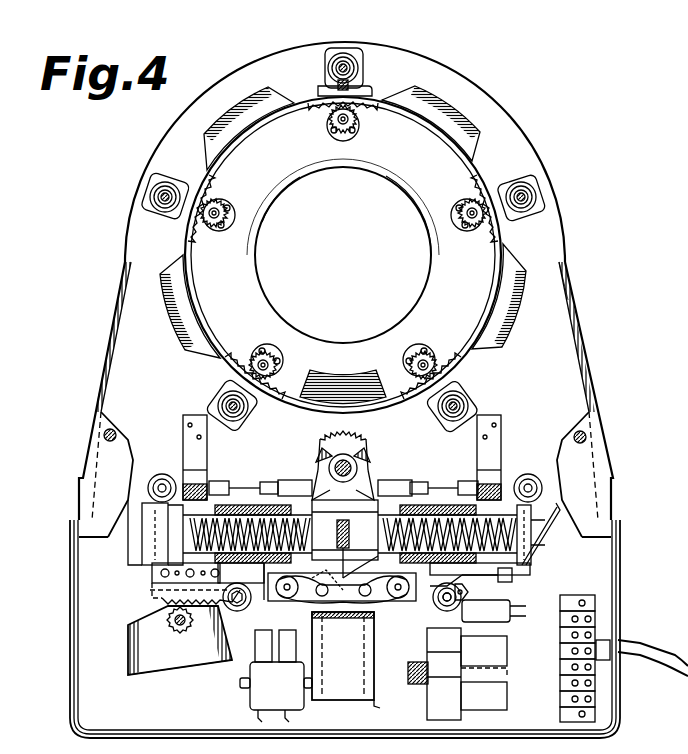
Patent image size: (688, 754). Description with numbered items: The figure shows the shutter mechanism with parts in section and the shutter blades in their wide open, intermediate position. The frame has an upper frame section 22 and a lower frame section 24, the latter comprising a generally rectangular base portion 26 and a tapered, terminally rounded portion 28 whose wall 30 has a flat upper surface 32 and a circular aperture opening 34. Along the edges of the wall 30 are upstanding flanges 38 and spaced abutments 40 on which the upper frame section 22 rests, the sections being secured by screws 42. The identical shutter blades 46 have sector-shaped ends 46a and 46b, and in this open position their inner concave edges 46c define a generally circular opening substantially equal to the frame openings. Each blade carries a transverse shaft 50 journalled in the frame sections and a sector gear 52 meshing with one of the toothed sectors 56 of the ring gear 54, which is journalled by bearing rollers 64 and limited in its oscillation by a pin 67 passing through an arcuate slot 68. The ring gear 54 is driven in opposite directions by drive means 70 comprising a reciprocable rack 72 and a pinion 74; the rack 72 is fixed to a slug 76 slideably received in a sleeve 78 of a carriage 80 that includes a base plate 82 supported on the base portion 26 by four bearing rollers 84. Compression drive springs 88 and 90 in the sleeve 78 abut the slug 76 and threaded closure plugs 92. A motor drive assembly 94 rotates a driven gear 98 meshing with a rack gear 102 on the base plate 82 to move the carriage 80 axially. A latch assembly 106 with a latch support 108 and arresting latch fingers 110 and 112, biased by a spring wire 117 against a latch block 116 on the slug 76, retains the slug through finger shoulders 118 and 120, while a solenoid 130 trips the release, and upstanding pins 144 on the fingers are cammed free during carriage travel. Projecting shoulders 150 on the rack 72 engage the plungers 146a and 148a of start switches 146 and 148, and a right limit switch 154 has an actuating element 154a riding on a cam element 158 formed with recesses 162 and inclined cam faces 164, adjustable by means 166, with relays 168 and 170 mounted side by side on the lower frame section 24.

The upper frame section 22 is at (598, 468).
The lower frame section 24 is at (605, 392).
The base portion 26 is at (622, 580).
The tapered portion 28 is at (515, 132).
The wall 30 is at (586, 318).
The flat upper surface 32 is at (572, 252).
The aperture opening 34 is at (400, 192).
The upstanding flanges 38 is at (103, 370).
The upstanding abutments 40 is at (346, 48).
The screws 42 is at (103, 435).
The shutter blades 46 is at (336, 160).
The sector-shaped end 46a is at (276, 203).
The sector-shaped end 46b is at (284, 94).
The inner concave edges 46c is at (368, 166).
The transverse shaft 50 is at (362, 128).
The sector gear 52 is at (328, 118).
The ring gear 54 is at (505, 282).
The toothed sectors 56 is at (384, 100).
The bearing rollers 64 is at (372, 68).
The pin 67 is at (334, 86).
The arcuate slot 68 is at (366, 90).
The drive means 70 is at (560, 552).
The rack 72 is at (318, 458).
The pinion 74 is at (372, 460).
The slug 76 is at (345, 530).
The sleeve 78 is at (498, 476).
The carriage 80 is at (135, 550).
The base plate 82 is at (150, 566).
The bearing rollers 84 is at (162, 474).
The compression drive spring 88 is at (155, 534).
The compression drive spring 90 is at (540, 535).
The closure plugs 92 is at (132, 498).
The motor drive assembly 94 is at (112, 666).
The driven gear 98 is at (170, 636).
The rack gear 102 is at (163, 601).
The latch assembly 106 is at (398, 600).
The latch support 108 is at (276, 596).
The latch finger 110 is at (241, 581).
The latch finger 112 is at (349, 536).
The latch block 116 is at (344, 656).
The spring wire 117 is at (276, 648).
The shoulder 118 is at (366, 566).
The shoulder 120 is at (322, 572).
The solenoid 130 is at (393, 708).
The pins 144 is at (324, 598).
The left hand start switch 146 is at (218, 490).
The plunger 146a is at (262, 482).
The right hand start switch 148 is at (466, 490).
The plunger 148a is at (420, 482).
The projecting shoulders 150 is at (292, 480).
The right limit switch 154 is at (510, 618).
The actuating element 154a is at (470, 590).
The cam element 158 is at (512, 568).
The recesses 162 is at (433, 581).
The inclined cam faces 164 is at (480, 563).
The adjusting means 166 is at (512, 574).
The relay 168 is at (508, 650).
The relay 170 is at (508, 694).